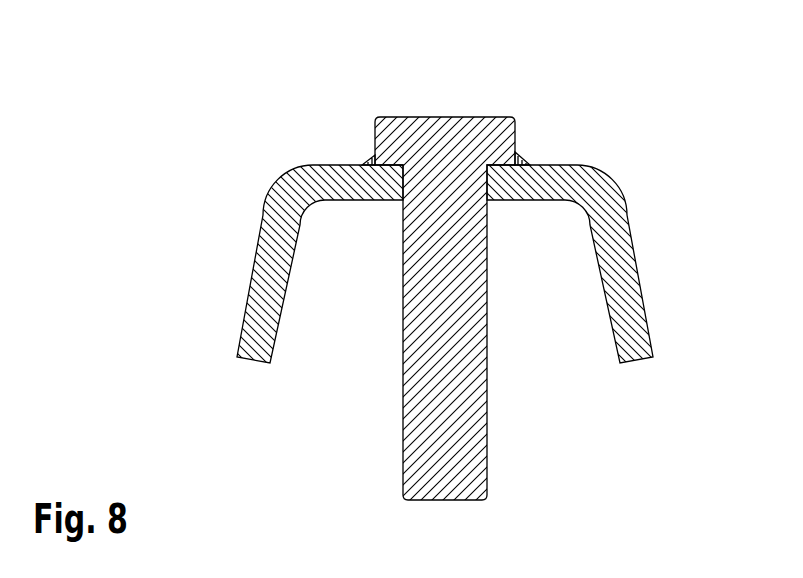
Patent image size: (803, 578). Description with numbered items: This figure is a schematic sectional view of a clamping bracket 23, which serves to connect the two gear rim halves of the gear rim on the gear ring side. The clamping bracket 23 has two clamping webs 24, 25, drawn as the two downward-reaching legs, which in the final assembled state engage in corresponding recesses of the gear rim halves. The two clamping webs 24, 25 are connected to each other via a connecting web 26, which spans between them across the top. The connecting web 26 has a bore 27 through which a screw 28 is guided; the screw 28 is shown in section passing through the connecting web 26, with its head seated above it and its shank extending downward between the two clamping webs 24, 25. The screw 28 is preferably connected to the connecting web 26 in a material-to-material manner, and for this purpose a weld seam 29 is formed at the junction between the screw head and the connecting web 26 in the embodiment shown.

The clamping bracket 23 is at (328, 113).
The clamping web 24 is at (630, 298).
The clamping web 25 is at (260, 328).
The connecting web 26 is at (598, 197).
The bore 27 is at (386, 187).
The screw 28 is at (447, 135).
The weld seam 29 is at (536, 145).